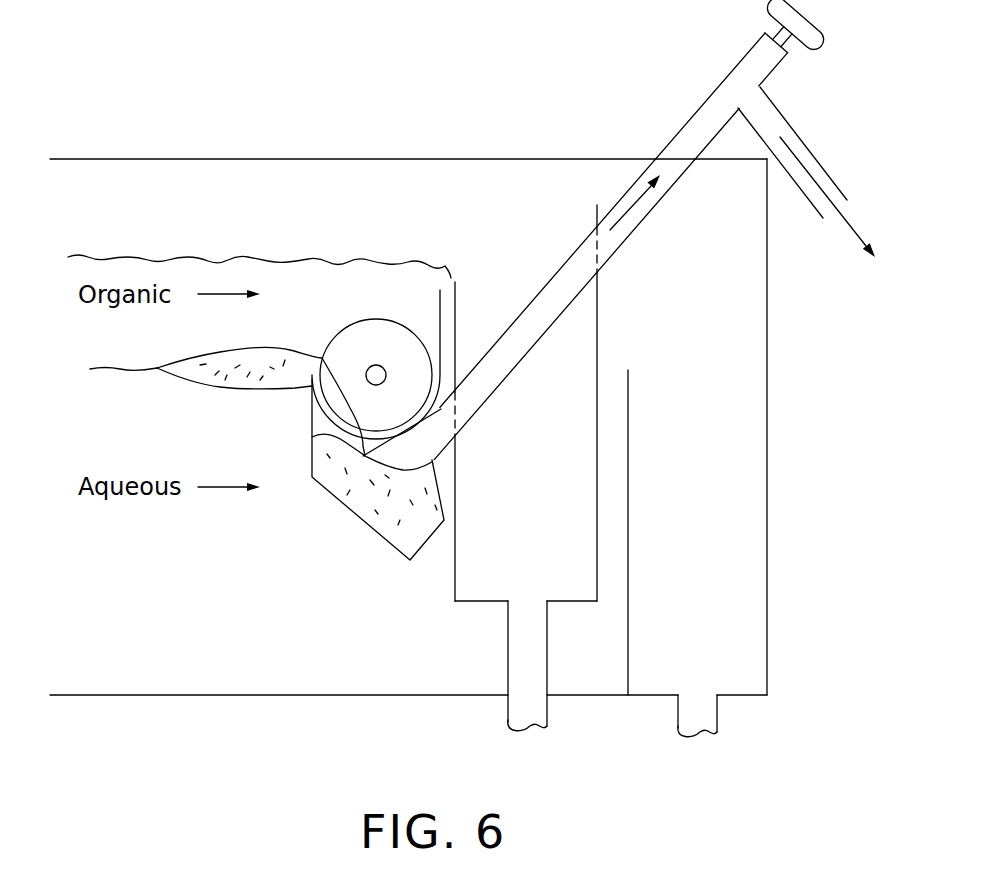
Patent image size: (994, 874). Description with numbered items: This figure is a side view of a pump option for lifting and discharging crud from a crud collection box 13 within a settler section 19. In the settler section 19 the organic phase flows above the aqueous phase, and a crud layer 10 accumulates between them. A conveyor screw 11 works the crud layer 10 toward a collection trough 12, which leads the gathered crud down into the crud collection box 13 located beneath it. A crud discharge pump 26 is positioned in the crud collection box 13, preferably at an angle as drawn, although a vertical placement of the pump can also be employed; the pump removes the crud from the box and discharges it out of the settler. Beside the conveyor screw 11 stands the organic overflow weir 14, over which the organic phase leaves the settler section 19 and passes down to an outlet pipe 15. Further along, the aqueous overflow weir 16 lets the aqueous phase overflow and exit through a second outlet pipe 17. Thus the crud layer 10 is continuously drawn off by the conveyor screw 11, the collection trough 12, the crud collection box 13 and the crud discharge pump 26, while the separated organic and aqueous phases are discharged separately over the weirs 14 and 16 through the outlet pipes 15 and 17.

The crud layer 10 is at (257, 389).
The conveyor screw 11 is at (377, 319).
The collection trough 12 is at (440, 298).
The crud collection box 13 is at (378, 535).
The organic overflow weir 14 is at (470, 303).
The outlet pipe 15 is at (505, 710).
The aqueous overflow weir 16 is at (628, 502).
The outlet pipe 17 is at (678, 708).
The settler section 19 is at (768, 345).
The crud discharge pump 26 is at (700, 108).